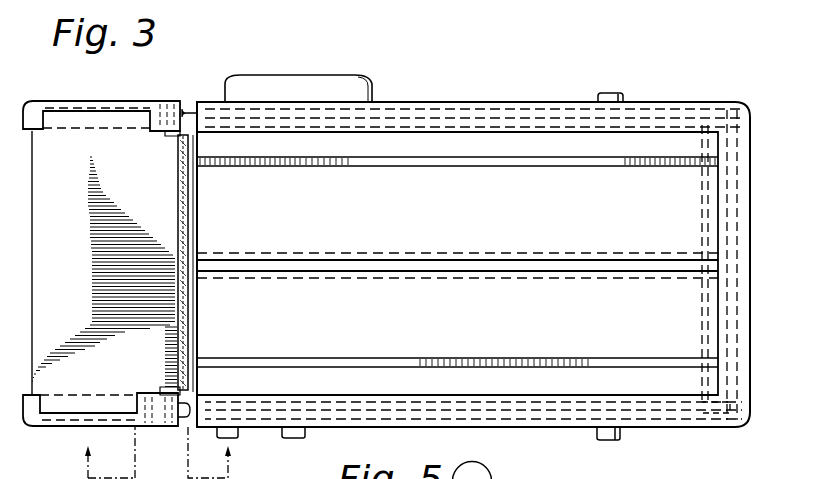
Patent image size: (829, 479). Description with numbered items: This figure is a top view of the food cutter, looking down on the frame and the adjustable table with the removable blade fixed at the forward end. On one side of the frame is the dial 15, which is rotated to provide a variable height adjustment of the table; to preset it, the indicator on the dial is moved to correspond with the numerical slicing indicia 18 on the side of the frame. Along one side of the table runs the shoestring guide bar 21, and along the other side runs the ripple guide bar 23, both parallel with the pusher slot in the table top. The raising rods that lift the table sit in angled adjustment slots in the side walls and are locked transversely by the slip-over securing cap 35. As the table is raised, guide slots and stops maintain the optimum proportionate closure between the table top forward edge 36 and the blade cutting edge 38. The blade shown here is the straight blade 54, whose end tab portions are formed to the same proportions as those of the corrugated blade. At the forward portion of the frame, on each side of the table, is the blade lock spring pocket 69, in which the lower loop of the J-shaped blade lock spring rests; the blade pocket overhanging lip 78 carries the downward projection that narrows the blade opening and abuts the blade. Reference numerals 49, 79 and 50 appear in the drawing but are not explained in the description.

In FIG. 3, the dial 15 is at (287, 80).
In FIG. 3, the shoestring guide bar 21 is at (462, 163).
In FIG. 3, the ripple guide bar 23 is at (277, 368).
In FIG. 3, the slip-over securing cap 35 is at (620, 95).
In FIG. 3, the table top forward edge 36 is at (195, 349).
In FIG. 3, the blade cutting edge 38 is at (185, 229).
In FIG. 3, the cabinet bottom 49 is at (721, 465).
In FIG. 3, the straight blade 54 is at (112, 137).
In FIG. 3, the blade lock spring pocket 69 is at (187, 110).
In FIG. 3, the blade pocket overhanging lip 78 is at (62, 117).
In FIG. 3, the door frame bottom rail 79 is at (93, 403).
In FIG. 5, the hinge pin 50 is at (478, 470).
In FIG. 5, the numerical slicing indicia 18 is at (510, 475).